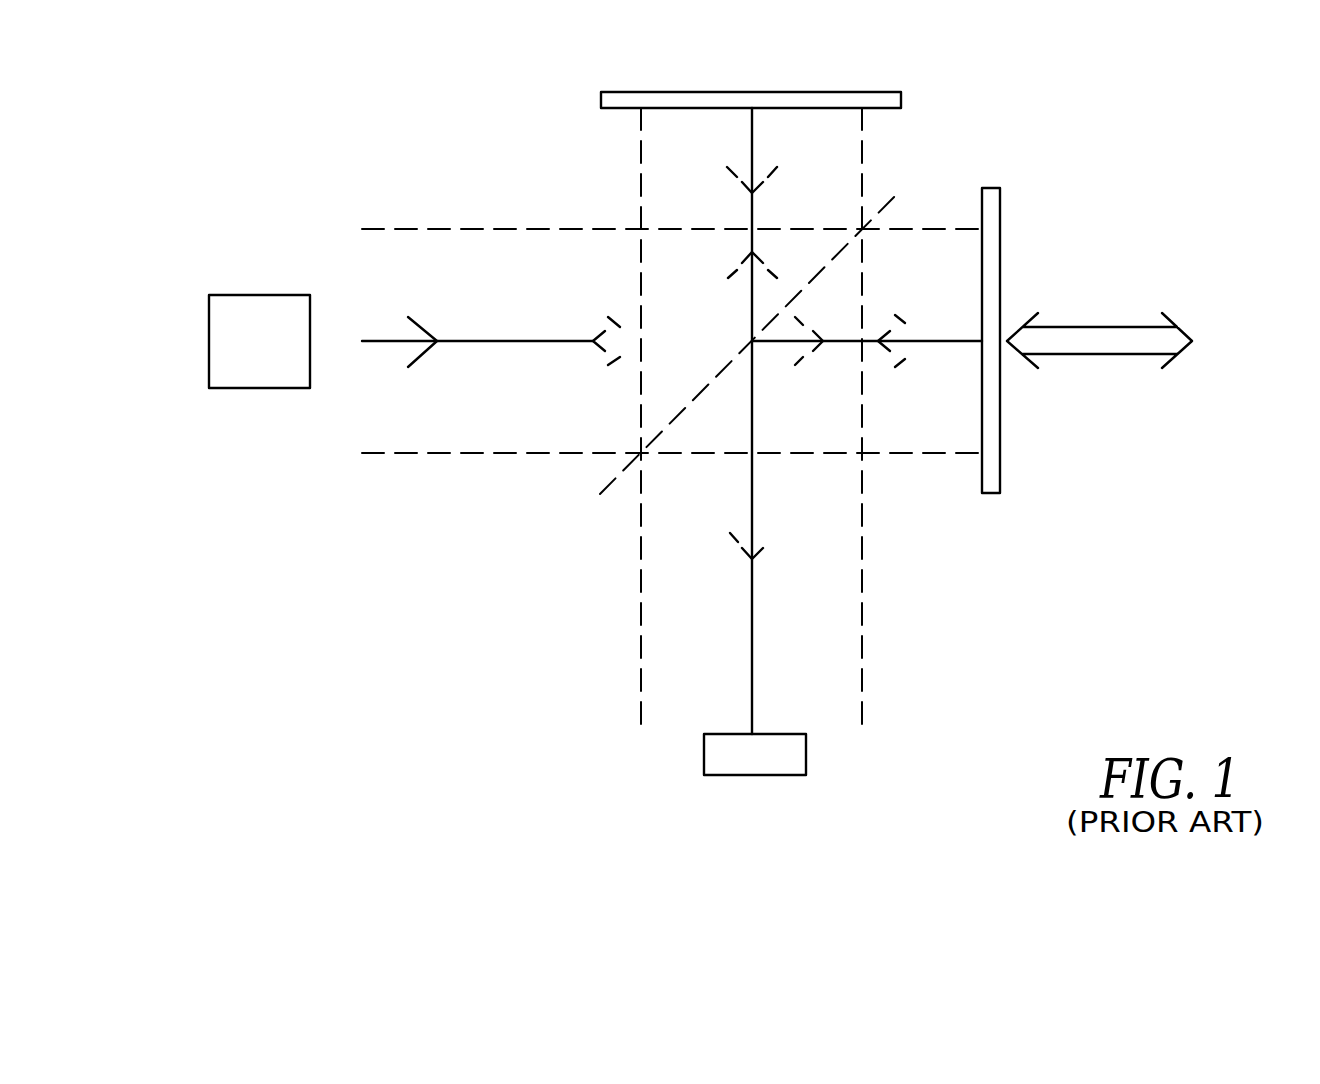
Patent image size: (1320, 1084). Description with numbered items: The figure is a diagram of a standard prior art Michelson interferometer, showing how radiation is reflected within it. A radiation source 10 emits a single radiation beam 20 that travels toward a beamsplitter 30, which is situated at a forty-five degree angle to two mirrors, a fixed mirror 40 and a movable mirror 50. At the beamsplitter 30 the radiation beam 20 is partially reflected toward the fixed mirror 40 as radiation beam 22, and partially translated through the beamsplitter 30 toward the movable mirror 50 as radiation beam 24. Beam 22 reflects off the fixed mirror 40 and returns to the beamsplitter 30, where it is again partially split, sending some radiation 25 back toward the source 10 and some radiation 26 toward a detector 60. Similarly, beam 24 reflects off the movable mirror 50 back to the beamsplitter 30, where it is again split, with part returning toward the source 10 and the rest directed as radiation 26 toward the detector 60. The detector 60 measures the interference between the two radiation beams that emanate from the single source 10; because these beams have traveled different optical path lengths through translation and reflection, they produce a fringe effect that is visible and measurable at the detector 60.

The radiation source 10 is at (236, 295).
The radiation beam 20 is at (419, 327).
The radiation beam 22 is at (753, 159).
The radiation beam 24 is at (800, 323).
The radiation 25 is at (598, 332).
The radiation 26 is at (777, 532).
The beamsplitter 30 is at (612, 492).
The fixed mirror 40 is at (633, 97).
The movable mirror 50 is at (1001, 215).
The detector 60 is at (806, 757).